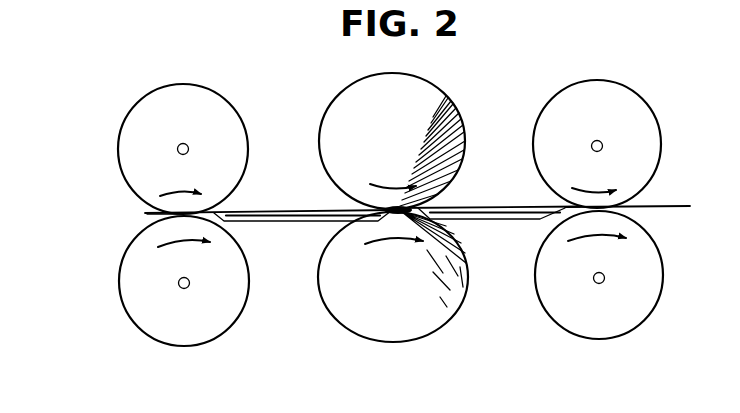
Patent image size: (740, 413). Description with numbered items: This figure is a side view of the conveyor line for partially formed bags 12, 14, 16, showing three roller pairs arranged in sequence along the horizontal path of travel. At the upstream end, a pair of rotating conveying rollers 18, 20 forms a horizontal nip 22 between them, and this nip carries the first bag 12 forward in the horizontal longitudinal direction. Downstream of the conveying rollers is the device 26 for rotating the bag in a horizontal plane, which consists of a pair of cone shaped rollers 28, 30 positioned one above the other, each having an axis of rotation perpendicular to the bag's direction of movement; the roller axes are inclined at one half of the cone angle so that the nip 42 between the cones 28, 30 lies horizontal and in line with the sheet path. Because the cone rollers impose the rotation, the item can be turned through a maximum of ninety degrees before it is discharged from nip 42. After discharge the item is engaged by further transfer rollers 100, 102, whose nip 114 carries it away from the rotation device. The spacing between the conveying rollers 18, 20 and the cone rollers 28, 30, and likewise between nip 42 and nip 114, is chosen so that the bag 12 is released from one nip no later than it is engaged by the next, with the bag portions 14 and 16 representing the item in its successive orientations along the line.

The first bag 12 is at (246, 213).
The partially formed bag 14 is at (467, 209).
The partially formed bag 16 is at (665, 206).
The conveying roller 18 is at (132, 128).
The conveying roller 20 is at (140, 308).
The horizontal nip 22 is at (142, 222).
The device for rotating the bag 26 is at (469, 122).
The cone shaped roller 28 is at (426, 83).
The cone shaped roller 30 is at (390, 343).
The nip 42 is at (350, 207).
The transfer roller 100 is at (645, 120).
The transfer roller 102 is at (663, 268).
The nip 114 is at (552, 200).